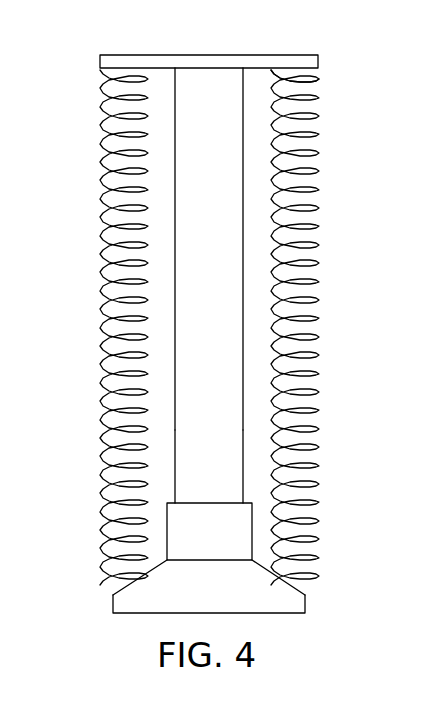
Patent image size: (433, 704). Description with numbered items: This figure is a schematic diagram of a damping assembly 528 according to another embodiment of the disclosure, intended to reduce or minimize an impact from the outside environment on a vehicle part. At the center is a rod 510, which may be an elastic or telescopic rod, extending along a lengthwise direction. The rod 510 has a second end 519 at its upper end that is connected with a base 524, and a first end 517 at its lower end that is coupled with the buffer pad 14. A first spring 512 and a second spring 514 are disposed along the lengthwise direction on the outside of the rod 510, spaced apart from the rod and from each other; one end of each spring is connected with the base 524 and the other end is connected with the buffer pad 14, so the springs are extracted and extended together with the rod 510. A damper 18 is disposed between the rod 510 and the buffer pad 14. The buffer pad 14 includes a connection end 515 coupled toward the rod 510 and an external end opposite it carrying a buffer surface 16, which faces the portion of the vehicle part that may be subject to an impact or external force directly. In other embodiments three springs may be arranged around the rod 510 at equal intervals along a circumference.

The second end 519 is at (213, 78).
The base 524 is at (305, 62).
The damping assembly 528 is at (339, 316).
The second spring 514 is at (110, 298).
The first spring 512 is at (307, 300).
The rod 510 is at (245, 360).
The connection end 515 is at (244, 485).
The first end 517 is at (183, 493).
The damper 18 is at (227, 522).
The buffer pad 14 is at (276, 575).
The buffer surface 16 is at (276, 613).